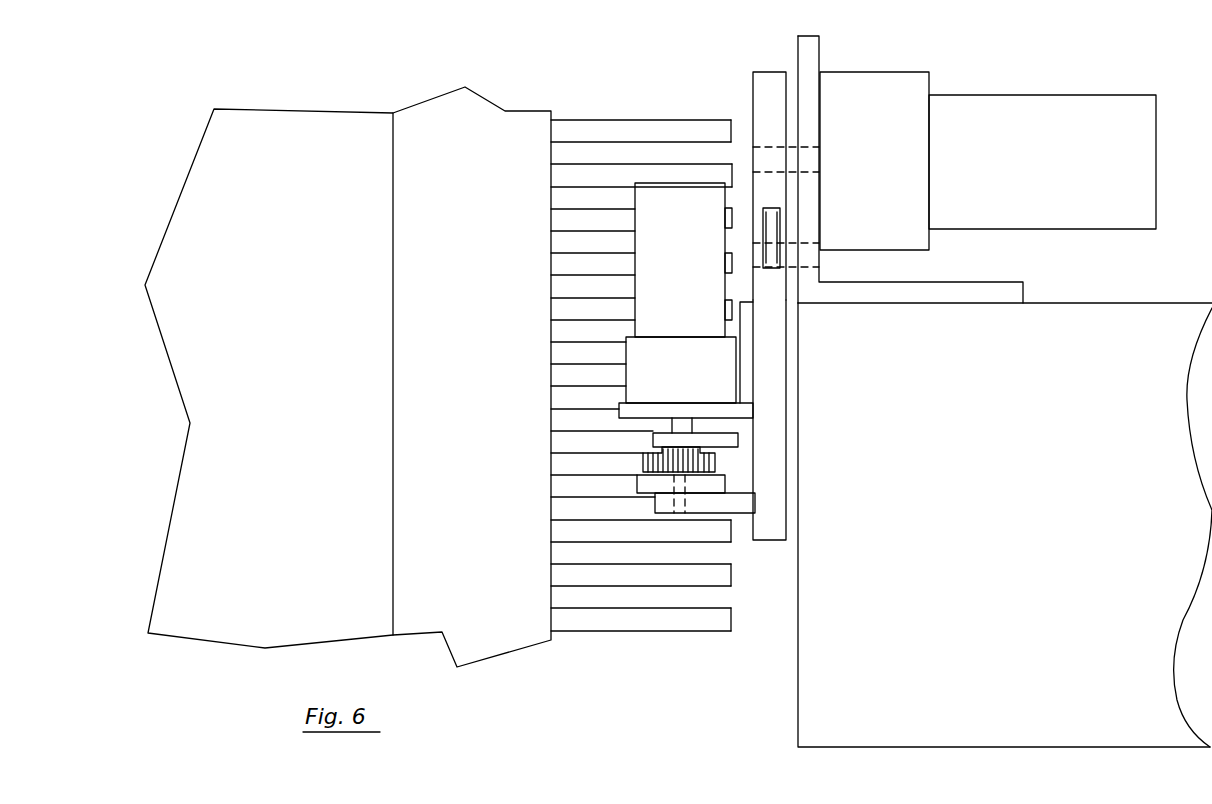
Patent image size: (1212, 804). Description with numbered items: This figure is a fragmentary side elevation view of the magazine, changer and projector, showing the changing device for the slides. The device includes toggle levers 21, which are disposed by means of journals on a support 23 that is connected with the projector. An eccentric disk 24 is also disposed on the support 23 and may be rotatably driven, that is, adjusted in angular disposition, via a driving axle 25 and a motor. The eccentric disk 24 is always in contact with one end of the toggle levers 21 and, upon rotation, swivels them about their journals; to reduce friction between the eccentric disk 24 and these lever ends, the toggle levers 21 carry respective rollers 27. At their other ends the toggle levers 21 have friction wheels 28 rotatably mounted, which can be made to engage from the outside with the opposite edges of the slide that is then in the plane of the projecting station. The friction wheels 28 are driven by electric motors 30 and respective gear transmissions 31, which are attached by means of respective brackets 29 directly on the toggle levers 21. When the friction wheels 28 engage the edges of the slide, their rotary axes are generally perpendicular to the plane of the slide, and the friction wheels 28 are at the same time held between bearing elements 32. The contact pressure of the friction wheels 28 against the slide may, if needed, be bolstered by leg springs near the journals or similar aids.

The toggle lever 21 is at (775, 463).
The support 23 is at (810, 62).
The eccentric disk 24 is at (772, 83).
The driving axle 25 is at (753, 162).
The roller 27 is at (773, 252).
The friction wheel 28 is at (650, 488).
The bracket 29 is at (755, 352).
The electric motor 30 is at (689, 274).
The gear transmission 31 is at (657, 453).
The bearing element 32 is at (738, 442).